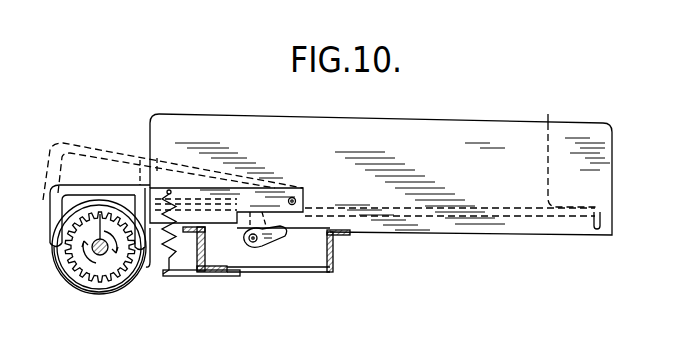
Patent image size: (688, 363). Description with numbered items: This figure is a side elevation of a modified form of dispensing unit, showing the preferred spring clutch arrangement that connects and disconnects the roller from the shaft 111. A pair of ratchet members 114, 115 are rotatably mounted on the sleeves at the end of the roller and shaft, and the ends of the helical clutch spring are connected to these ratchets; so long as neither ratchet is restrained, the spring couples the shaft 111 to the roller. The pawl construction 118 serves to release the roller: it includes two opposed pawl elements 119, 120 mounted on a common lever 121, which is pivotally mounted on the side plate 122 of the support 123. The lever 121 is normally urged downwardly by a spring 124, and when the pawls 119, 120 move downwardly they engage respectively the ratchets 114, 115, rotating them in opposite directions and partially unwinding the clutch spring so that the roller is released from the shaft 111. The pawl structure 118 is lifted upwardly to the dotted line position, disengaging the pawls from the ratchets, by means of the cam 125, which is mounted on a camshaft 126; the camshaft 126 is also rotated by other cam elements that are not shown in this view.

The shaft 111 is at (92, 255).
The ratchet member 114 is at (74, 287).
The ratchet member 115 is at (105, 265).
The pawl construction 118 is at (96, 190).
The pawl element 119 is at (50, 240).
The pawl element 120 is at (150, 245).
The lever 121 is at (214, 190).
The side plate 122 is at (404, 120).
The support 123 is at (502, 111).
The spring 124 is at (168, 240).
The cam 125 is at (276, 236).
The camshaft 126 is at (253, 247).